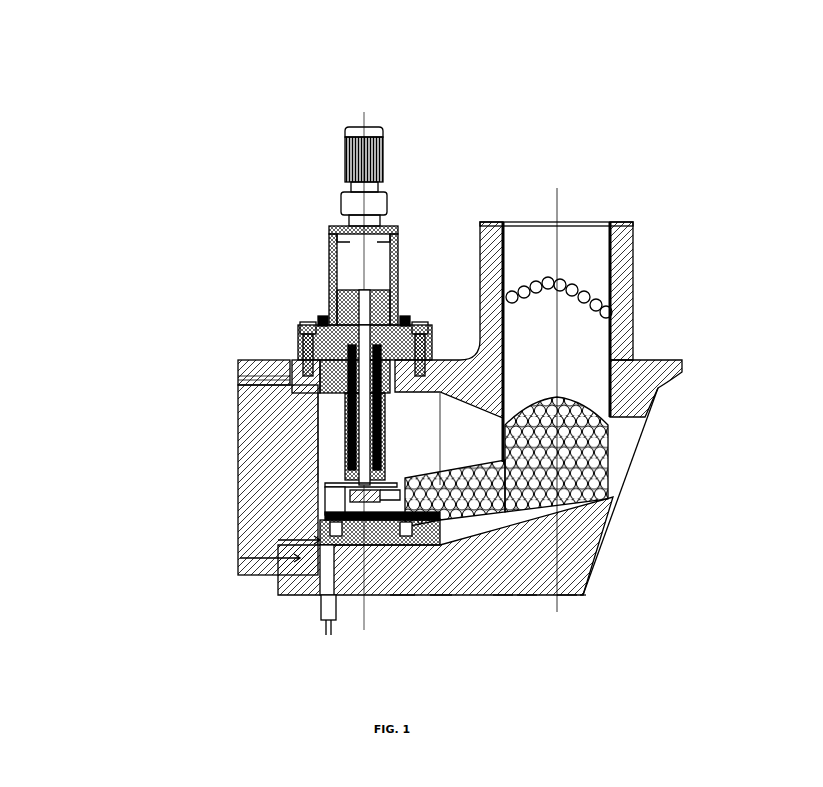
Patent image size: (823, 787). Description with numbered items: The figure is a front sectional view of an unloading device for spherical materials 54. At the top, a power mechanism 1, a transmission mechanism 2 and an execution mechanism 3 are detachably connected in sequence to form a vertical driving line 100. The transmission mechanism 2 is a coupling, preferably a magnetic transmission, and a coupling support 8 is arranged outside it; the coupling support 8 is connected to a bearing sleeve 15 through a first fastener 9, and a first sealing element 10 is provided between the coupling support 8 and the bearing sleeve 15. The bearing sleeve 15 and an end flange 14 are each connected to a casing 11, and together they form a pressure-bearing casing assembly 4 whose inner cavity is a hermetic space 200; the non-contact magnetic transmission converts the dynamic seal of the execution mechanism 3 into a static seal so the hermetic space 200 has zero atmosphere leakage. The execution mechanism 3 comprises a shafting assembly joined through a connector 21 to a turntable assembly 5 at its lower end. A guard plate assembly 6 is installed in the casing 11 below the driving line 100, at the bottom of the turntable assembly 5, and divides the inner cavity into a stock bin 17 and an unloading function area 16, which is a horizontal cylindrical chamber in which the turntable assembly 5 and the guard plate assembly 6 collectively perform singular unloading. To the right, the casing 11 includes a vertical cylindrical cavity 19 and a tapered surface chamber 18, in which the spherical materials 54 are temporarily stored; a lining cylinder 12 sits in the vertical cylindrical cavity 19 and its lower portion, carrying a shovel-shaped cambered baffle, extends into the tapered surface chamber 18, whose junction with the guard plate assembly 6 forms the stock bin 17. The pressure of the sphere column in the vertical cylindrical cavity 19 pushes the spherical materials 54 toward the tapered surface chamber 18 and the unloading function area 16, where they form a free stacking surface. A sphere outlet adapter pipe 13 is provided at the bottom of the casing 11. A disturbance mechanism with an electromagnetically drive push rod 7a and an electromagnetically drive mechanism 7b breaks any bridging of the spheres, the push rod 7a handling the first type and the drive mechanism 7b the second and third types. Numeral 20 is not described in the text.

The power mechanism 1 is at (357, 195).
The vertical driving line 100 is at (386, 130).
The transmission mechanism 2 is at (335, 265).
The execution mechanism 3 is at (323, 320).
The bearing sleeve 15 is at (298, 336).
The pressure-bearing casing assembly 4 is at (238, 368).
The end flange 14 is at (262, 417).
The turntable assembly 5 is at (328, 497).
The guard plate assembly 6 is at (320, 537).
The sphere outlet adapter pipe 13 is at (320, 608).
The coupling support 8 is at (400, 263).
The hermetic space 200 is at (572, 217).
The first fastener 9 is at (503, 272).
The first sealing element 10 is at (503, 283).
The casing 11 is at (633, 327).
The lining cylinder 12 is at (637, 360).
The vertical cylindrical cavity 19 is at (540, 382).
The spherical materials 54 is at (615, 497).
The connector 21 is at (402, 598).
The base section 20 is at (440, 598).
The unloading function area 16 is at (463, 593).
The stock bin 17 is at (527, 598).
The tapered surface chamber 18 is at (567, 598).
The electromagnetically drive mechanism 7b is at (503, 598).
The electromagnetically drive push rod 7a is at (588, 598).